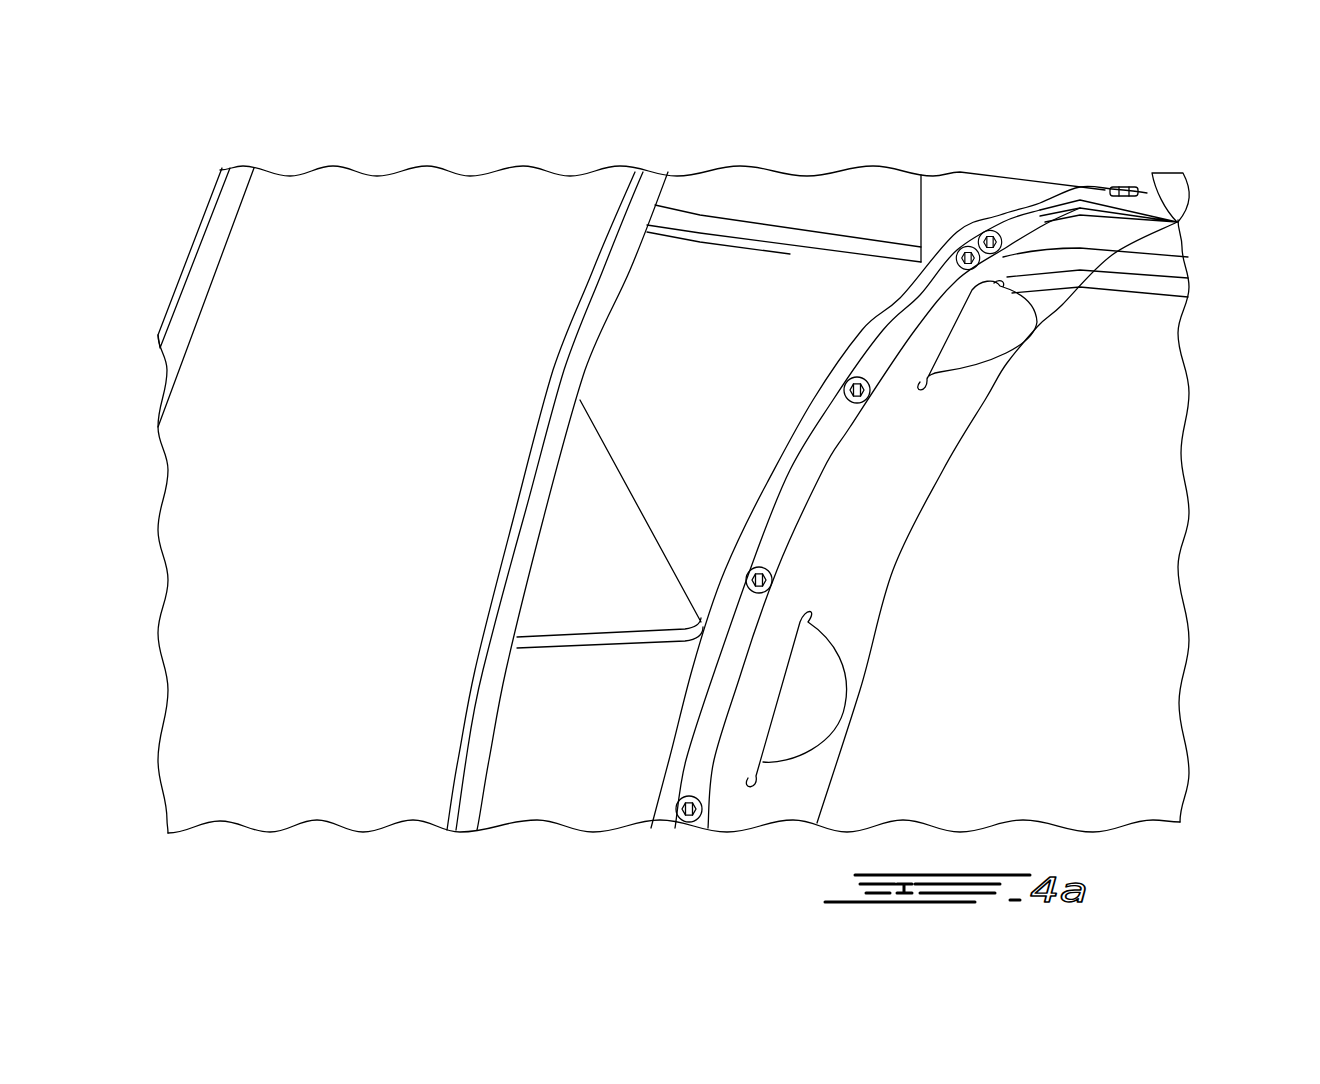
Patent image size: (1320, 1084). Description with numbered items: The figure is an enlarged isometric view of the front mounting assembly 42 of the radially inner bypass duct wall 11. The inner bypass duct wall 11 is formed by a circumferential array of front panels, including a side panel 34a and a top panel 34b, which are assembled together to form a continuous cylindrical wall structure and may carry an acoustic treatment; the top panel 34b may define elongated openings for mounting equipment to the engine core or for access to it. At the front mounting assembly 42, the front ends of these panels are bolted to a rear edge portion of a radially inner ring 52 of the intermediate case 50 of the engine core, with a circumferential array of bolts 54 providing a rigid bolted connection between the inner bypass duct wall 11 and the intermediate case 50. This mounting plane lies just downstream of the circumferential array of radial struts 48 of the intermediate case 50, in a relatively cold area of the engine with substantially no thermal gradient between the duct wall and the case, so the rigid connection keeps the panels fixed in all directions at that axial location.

The inner bypass duct wall 11 is at (1130, 180).
The side panel 34a is at (1097, 468).
The top panel 34b is at (1163, 243).
The front mounting assembly 42 is at (678, 832).
The radial struts 48 is at (839, 190).
The intermediate case 50 is at (537, 160).
The radially inner ring 52 is at (960, 192).
The bolts 54 is at (845, 387).